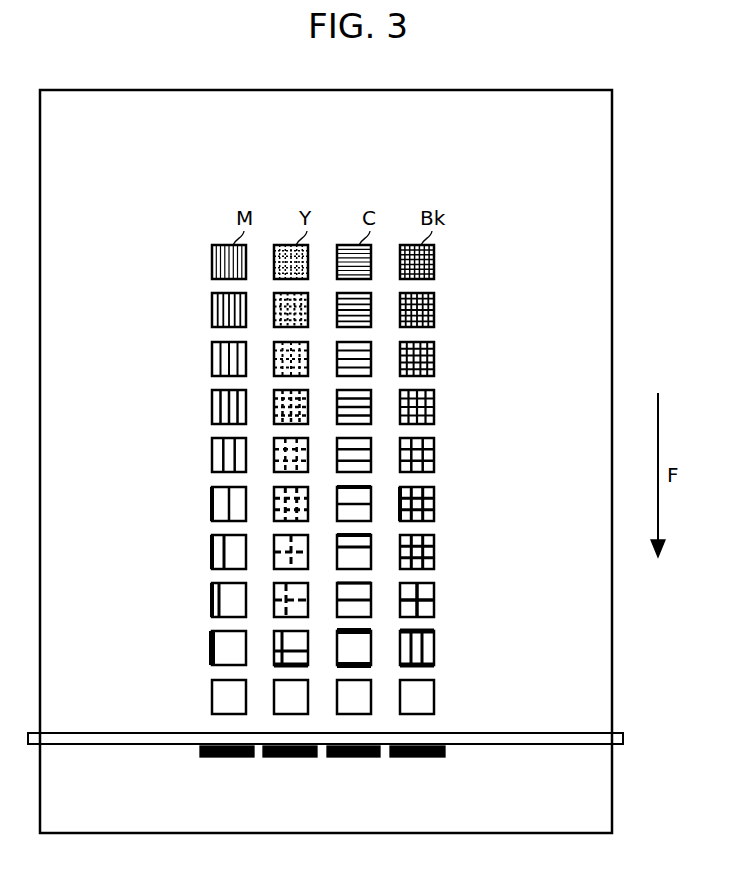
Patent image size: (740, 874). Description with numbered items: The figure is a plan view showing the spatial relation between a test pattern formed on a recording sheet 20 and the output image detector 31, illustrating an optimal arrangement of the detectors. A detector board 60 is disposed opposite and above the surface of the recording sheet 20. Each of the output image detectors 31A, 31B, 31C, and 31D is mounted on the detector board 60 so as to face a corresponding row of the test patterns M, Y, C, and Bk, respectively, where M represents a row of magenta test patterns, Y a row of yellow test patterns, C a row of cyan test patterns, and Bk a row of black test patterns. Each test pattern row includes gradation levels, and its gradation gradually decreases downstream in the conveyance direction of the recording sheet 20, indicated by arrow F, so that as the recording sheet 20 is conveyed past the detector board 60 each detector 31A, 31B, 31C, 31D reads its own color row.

The recording sheet 20 is at (562, 90).
The detector board 60 is at (524, 734).
The output image detector 31 is at (296, 781).
The output image detector 31A is at (228, 758).
The output image detector 31B is at (292, 758).
The output image detector 31C is at (356, 758).
The output image detector 31D is at (420, 758).